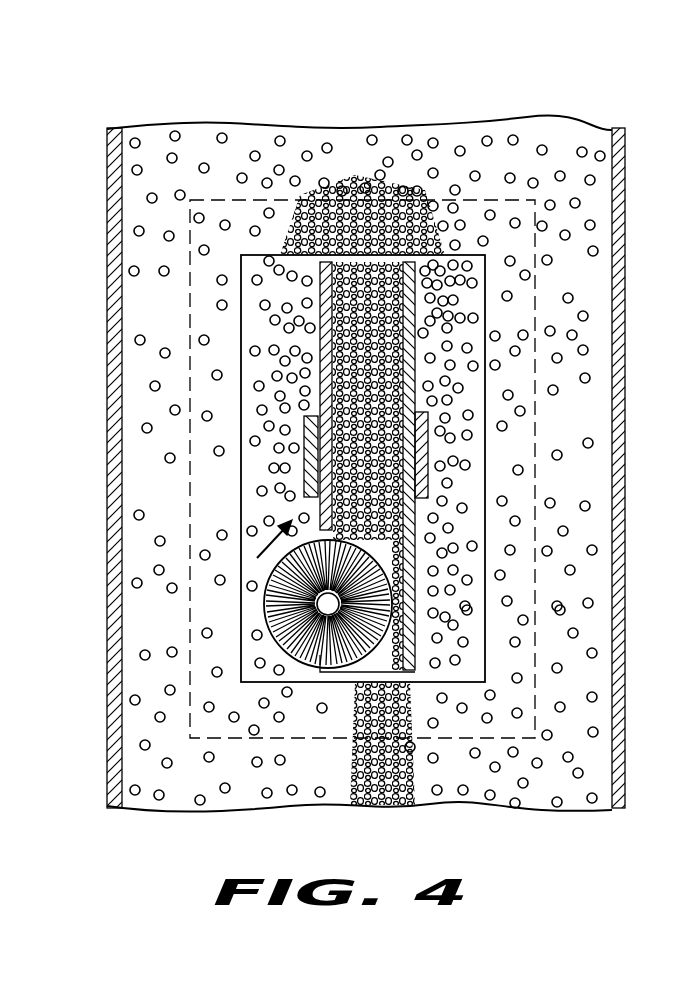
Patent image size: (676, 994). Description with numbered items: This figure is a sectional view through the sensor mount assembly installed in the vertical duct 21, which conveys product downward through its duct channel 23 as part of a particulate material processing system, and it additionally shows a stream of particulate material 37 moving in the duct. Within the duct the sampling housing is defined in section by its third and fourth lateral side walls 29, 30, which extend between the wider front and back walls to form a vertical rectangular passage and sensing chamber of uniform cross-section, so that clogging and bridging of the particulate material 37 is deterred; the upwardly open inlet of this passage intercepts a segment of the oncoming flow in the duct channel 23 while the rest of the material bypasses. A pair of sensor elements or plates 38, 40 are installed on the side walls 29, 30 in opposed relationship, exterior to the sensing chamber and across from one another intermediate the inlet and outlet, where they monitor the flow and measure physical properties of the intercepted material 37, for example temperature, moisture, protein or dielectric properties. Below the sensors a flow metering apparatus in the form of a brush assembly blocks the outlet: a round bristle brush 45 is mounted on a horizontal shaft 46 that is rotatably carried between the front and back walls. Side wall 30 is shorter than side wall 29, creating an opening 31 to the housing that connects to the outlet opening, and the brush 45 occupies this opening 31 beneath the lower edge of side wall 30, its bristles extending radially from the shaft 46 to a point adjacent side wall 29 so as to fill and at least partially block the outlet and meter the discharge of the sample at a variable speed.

The vertical duct 21 is at (100, 408).
The duct channel 23 is at (394, 469).
The lateral side wall 29 is at (415, 343).
The lateral side wall 30 is at (320, 342).
The opening 31 is at (322, 530).
The particulate material 37 is at (546, 146).
The sensor element 38 is at (428, 456).
The sensor element 40 is at (304, 462).
The bristle brush 45 is at (264, 611).
The shaft 46 is at (300, 666).